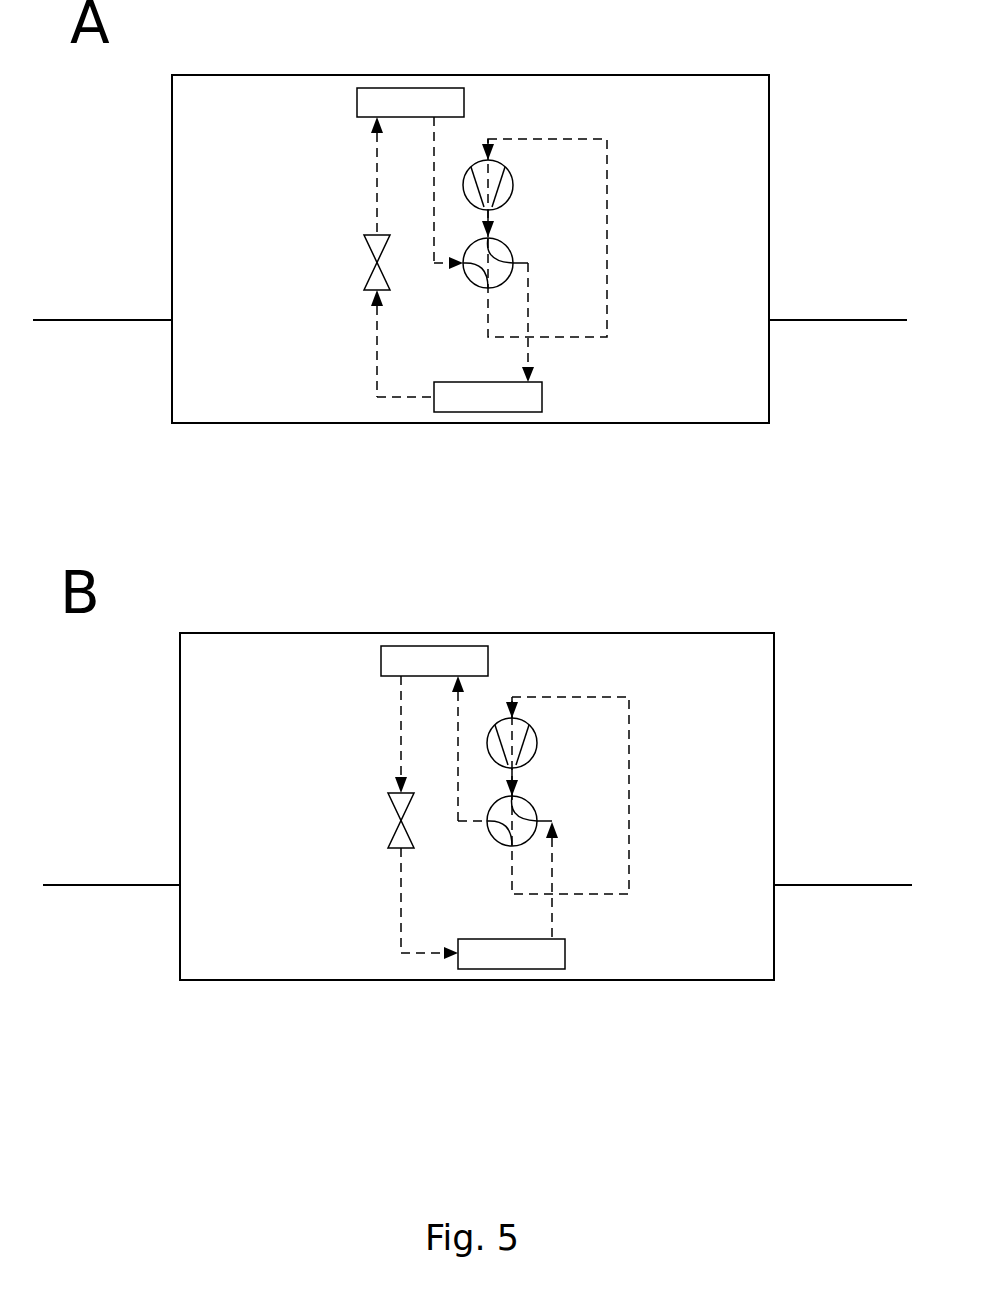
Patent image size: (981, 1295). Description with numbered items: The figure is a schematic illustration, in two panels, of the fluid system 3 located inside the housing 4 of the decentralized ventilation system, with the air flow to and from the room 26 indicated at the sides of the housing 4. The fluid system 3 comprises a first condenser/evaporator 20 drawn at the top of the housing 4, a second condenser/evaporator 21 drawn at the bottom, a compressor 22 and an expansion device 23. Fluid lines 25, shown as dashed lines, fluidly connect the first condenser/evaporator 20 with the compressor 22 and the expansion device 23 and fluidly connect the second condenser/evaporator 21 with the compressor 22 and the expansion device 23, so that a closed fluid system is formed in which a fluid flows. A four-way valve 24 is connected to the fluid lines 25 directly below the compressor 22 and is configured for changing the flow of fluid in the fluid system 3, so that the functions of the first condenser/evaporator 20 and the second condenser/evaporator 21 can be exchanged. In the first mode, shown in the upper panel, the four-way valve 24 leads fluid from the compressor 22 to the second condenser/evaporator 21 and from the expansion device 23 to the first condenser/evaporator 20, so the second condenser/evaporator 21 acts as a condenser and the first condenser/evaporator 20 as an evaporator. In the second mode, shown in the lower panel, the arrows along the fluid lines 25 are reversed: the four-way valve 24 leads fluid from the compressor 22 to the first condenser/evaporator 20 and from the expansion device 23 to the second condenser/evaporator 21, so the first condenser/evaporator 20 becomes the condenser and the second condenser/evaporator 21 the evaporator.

The fluid system 3 is at (278, 51).
The housing 4 is at (632, 75).
The first condenser/evaporator 20 is at (452, 99).
The second condenser/evaporator 21 is at (527, 393).
The compressor 22 is at (513, 187).
The expansion device 23 is at (375, 242).
The four-way valve 24 is at (508, 247).
The fluid lines 25 is at (376, 148).
The room 26 is at (96, 310).